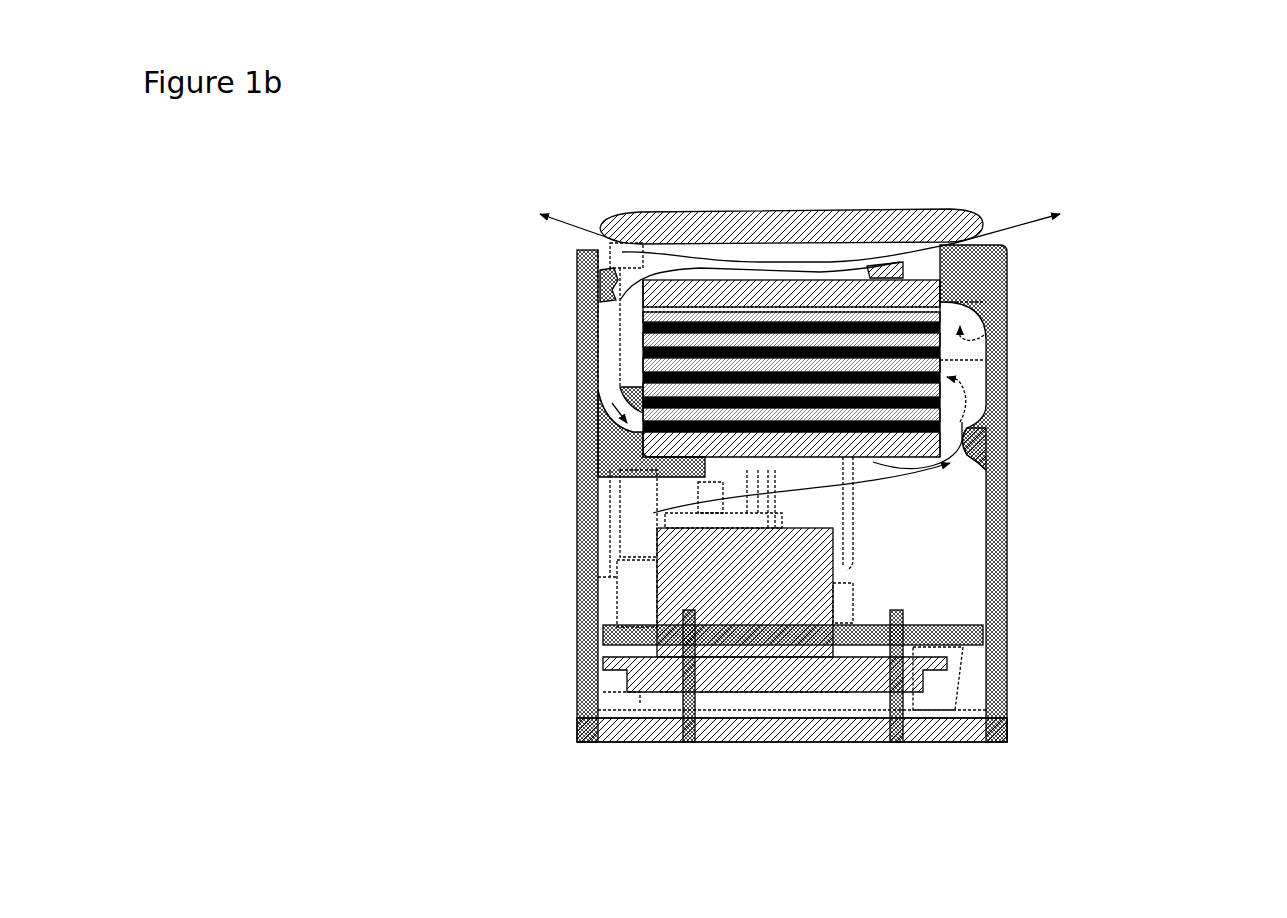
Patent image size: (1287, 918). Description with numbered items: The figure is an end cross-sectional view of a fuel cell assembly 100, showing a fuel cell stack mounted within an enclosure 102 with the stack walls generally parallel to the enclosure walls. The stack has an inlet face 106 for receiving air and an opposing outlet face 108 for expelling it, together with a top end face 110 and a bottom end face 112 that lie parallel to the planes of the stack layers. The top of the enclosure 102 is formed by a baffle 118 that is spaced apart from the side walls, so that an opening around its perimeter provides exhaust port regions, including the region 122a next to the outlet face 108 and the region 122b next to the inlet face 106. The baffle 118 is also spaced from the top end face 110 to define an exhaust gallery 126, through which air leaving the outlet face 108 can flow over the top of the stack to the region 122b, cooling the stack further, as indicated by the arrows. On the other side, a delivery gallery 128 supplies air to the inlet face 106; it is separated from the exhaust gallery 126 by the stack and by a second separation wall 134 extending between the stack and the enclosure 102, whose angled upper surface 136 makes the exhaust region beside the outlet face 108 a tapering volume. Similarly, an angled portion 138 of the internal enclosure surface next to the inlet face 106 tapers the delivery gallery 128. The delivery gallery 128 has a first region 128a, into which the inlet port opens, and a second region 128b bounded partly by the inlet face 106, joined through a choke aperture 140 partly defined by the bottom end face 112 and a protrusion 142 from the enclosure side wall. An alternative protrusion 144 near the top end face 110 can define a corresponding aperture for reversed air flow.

The fuel cell assembly 100 is at (1105, 233).
The enclosure 102 is at (578, 677).
The inlet face 106 is at (943, 360).
The outlet face 108 is at (643, 350).
The top end face 110 is at (772, 283).
The bottom end face 112 is at (880, 470).
The baffle 118 is at (677, 212).
The exhaust port region 122a is at (578, 243).
The exhaust port region 122b is at (992, 216).
The exhaust gallery 126 is at (800, 262).
The delivery gallery 128 is at (917, 565).
The first region 128a is at (955, 590).
The second region 128b is at (978, 377).
The second separation wall 134 is at (640, 470).
The angled upper surface 136 is at (633, 400).
The angled internal surface portion 138 is at (985, 333).
The aperture 140 is at (1010, 478).
The protrusion 142 is at (975, 436).
The protrusion 144 is at (574, 285).